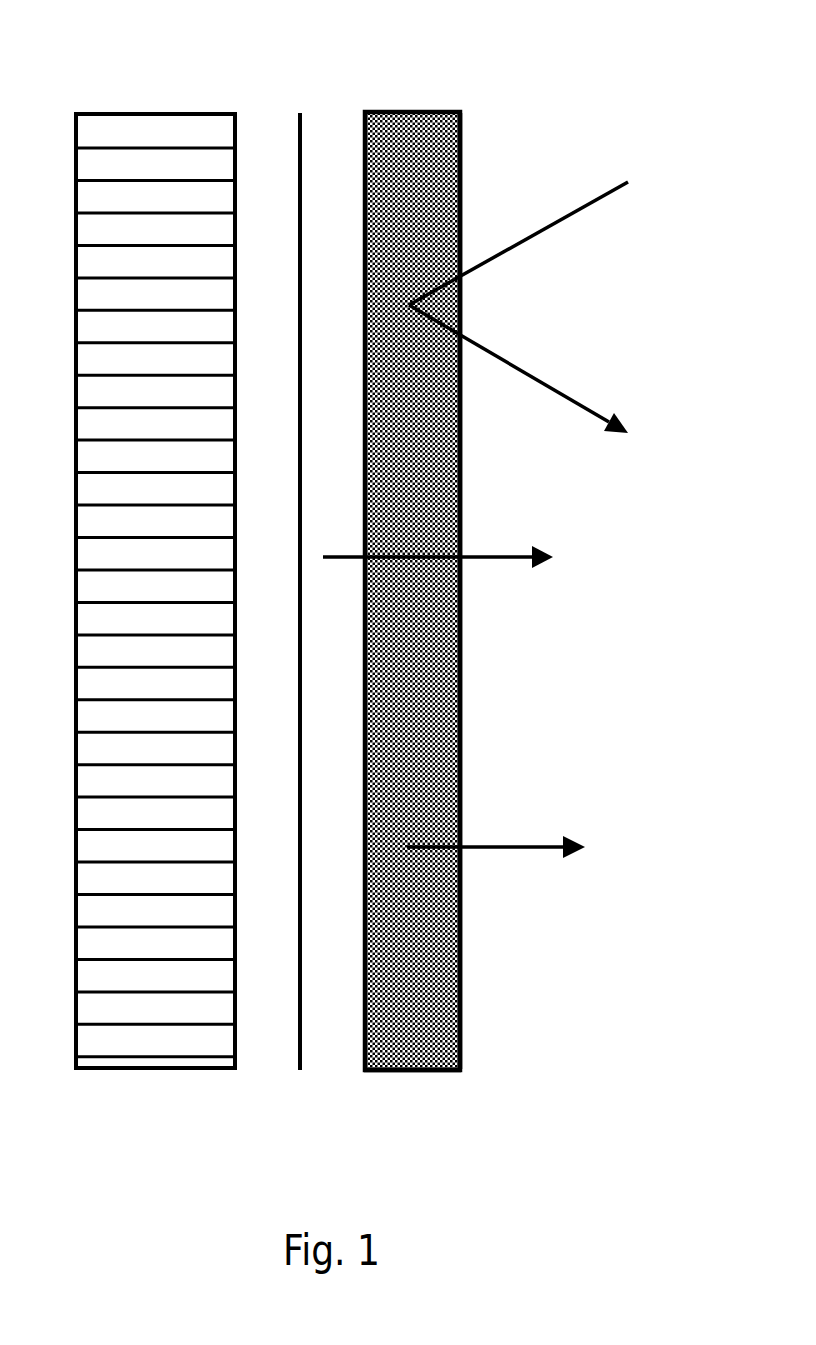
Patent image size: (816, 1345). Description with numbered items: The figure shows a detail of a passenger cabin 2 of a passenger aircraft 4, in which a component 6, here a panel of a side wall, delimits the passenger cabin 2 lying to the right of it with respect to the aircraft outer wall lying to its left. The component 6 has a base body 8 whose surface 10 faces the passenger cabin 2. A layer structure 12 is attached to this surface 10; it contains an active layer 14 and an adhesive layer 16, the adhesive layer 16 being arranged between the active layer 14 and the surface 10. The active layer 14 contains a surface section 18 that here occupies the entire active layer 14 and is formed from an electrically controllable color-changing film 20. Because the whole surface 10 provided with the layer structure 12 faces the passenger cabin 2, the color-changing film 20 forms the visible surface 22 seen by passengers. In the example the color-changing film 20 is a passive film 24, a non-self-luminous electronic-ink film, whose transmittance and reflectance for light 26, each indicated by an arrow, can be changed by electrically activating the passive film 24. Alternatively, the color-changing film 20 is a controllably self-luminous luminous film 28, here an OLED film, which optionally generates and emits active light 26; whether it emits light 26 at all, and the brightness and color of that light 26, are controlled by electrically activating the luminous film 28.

The passenger cabin 2 is at (653, 307).
The passenger aircraft 4 is at (580, 75).
The component 6 is at (222, 1133).
The base body 8 is at (162, 110).
The surface 10 is at (238, 166).
The layer structure 12 is at (423, 82).
The active layer 14 is at (415, 1072).
The adhesive layer 16 is at (298, 1073).
The surface section 18 is at (528, 982).
The color-changing film 20 is at (570, 591).
The visible surface 22 is at (555, 707).
The passive film 24 is at (570, 591).
The light 26 is at (588, 407).
The luminous film 28 is at (462, 795).